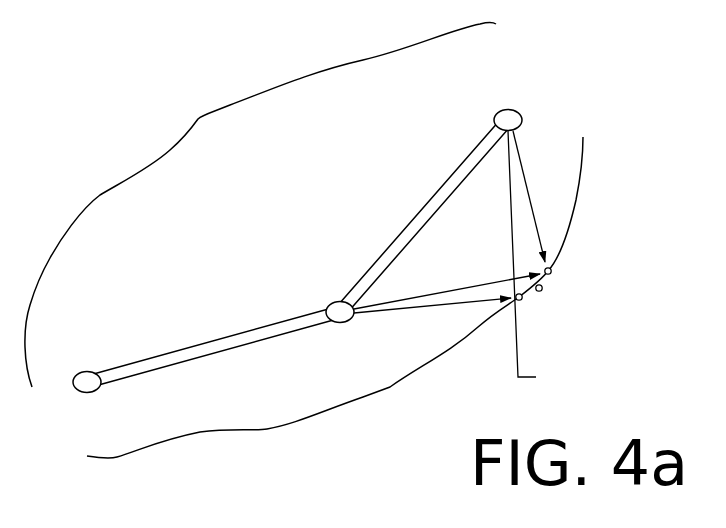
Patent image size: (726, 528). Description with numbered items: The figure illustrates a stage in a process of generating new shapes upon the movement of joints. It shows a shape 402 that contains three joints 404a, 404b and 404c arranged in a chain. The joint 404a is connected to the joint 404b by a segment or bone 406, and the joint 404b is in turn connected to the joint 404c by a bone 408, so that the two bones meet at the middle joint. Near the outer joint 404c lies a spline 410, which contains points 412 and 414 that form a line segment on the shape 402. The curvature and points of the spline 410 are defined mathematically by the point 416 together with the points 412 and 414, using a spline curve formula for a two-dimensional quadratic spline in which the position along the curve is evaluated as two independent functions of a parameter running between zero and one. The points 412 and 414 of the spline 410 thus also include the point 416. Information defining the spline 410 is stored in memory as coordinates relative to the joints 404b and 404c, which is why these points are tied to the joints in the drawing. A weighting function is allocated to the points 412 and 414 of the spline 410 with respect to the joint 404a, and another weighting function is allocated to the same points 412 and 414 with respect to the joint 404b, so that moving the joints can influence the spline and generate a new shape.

The shape 402 is at (220, 434).
The joint 404a is at (88, 371).
The joint 404b is at (332, 301).
The joint 404c is at (506, 110).
The bone 406 is at (235, 352).
The bone 408 is at (448, 177).
The spline 410 is at (582, 329).
The point 412 is at (552, 339).
The point 414 is at (551, 273).
The point 416 is at (542, 290).